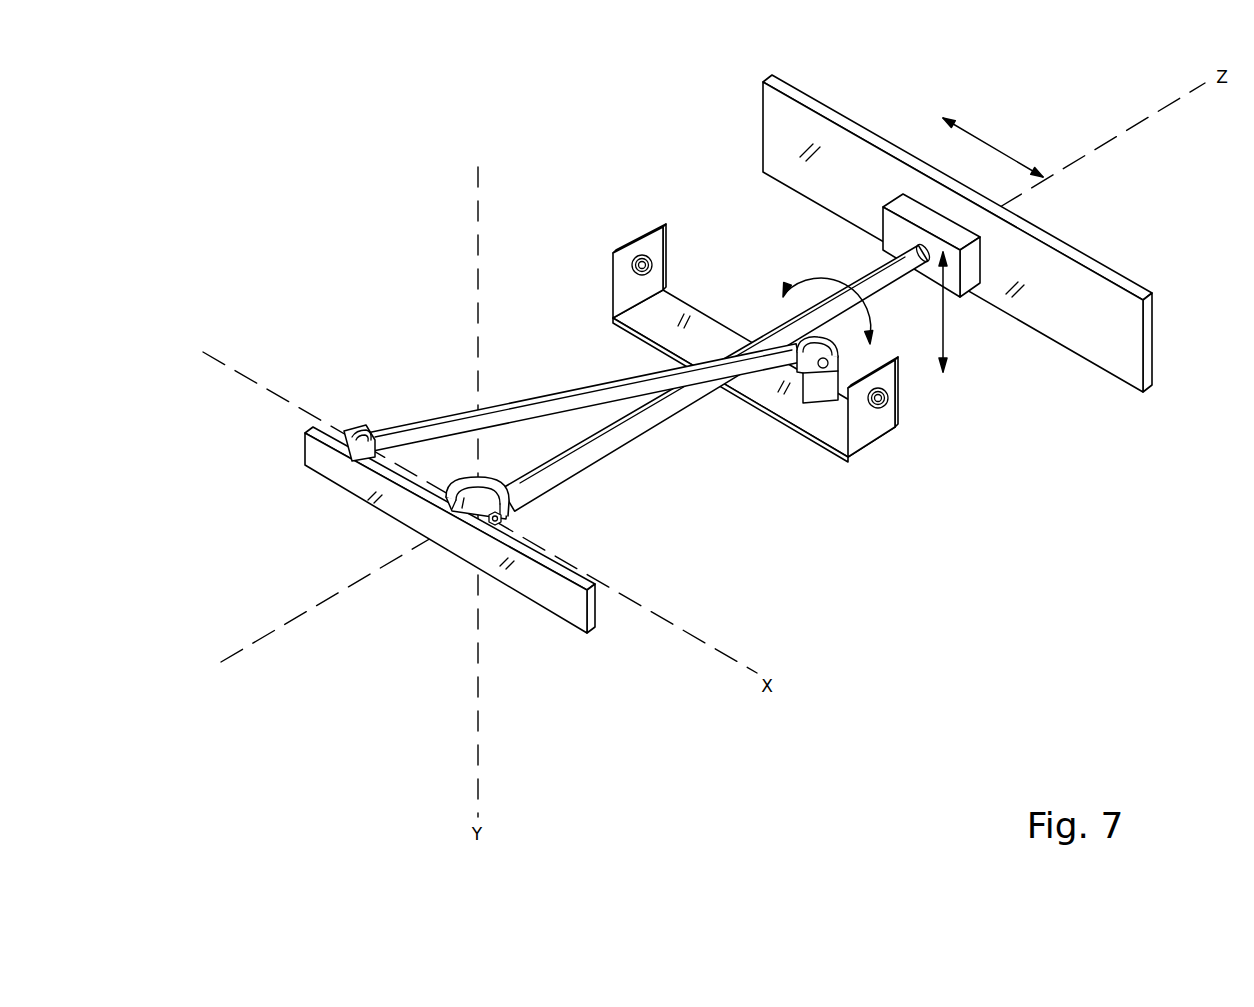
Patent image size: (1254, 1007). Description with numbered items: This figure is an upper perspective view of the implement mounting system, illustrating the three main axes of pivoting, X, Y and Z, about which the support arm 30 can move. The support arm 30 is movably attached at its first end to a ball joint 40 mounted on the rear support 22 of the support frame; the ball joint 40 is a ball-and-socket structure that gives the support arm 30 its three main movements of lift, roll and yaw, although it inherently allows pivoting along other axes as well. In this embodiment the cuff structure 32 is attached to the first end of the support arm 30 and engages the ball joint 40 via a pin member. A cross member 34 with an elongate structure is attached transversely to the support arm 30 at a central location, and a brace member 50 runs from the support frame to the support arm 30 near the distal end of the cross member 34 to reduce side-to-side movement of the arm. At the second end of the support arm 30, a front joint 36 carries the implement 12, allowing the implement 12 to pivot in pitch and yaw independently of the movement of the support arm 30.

The implement 12 is at (1103, 270).
The rear support 22 is at (328, 465).
The support arm 30 is at (692, 397).
The cuff structure 32 is at (466, 505).
The cross member 34 is at (713, 337).
The front joint 36 is at (910, 207).
The ball joint 40 is at (470, 517).
The brace member 50 is at (430, 432).